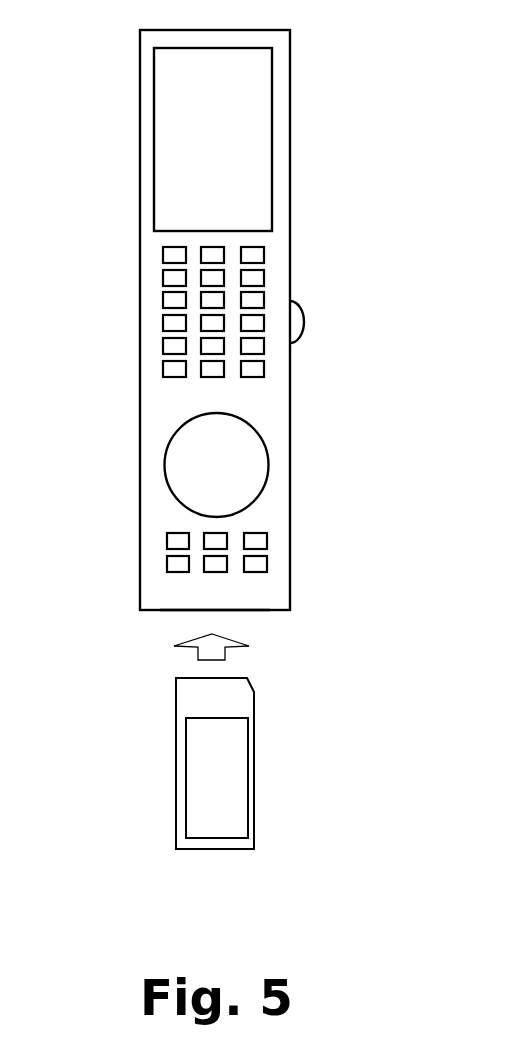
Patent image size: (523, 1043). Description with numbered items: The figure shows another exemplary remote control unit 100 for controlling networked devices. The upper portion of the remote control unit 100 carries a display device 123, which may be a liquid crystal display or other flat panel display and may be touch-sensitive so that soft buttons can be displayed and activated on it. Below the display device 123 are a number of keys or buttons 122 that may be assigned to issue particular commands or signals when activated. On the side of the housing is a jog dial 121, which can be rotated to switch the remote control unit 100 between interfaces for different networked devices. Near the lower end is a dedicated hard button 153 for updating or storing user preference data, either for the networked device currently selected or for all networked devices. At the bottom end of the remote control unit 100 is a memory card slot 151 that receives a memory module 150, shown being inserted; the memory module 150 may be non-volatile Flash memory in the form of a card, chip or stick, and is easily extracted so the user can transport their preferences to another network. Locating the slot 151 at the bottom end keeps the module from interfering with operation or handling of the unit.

The remote control unit 100 is at (112, 139).
The jog dial 121 is at (304, 325).
The keys or buttons 122 is at (175, 370).
The display device 123 is at (233, 184).
The memory module 150 is at (234, 745).
The memory card slot 151 is at (182, 611).
The dedicated hard button 153 is at (257, 563).